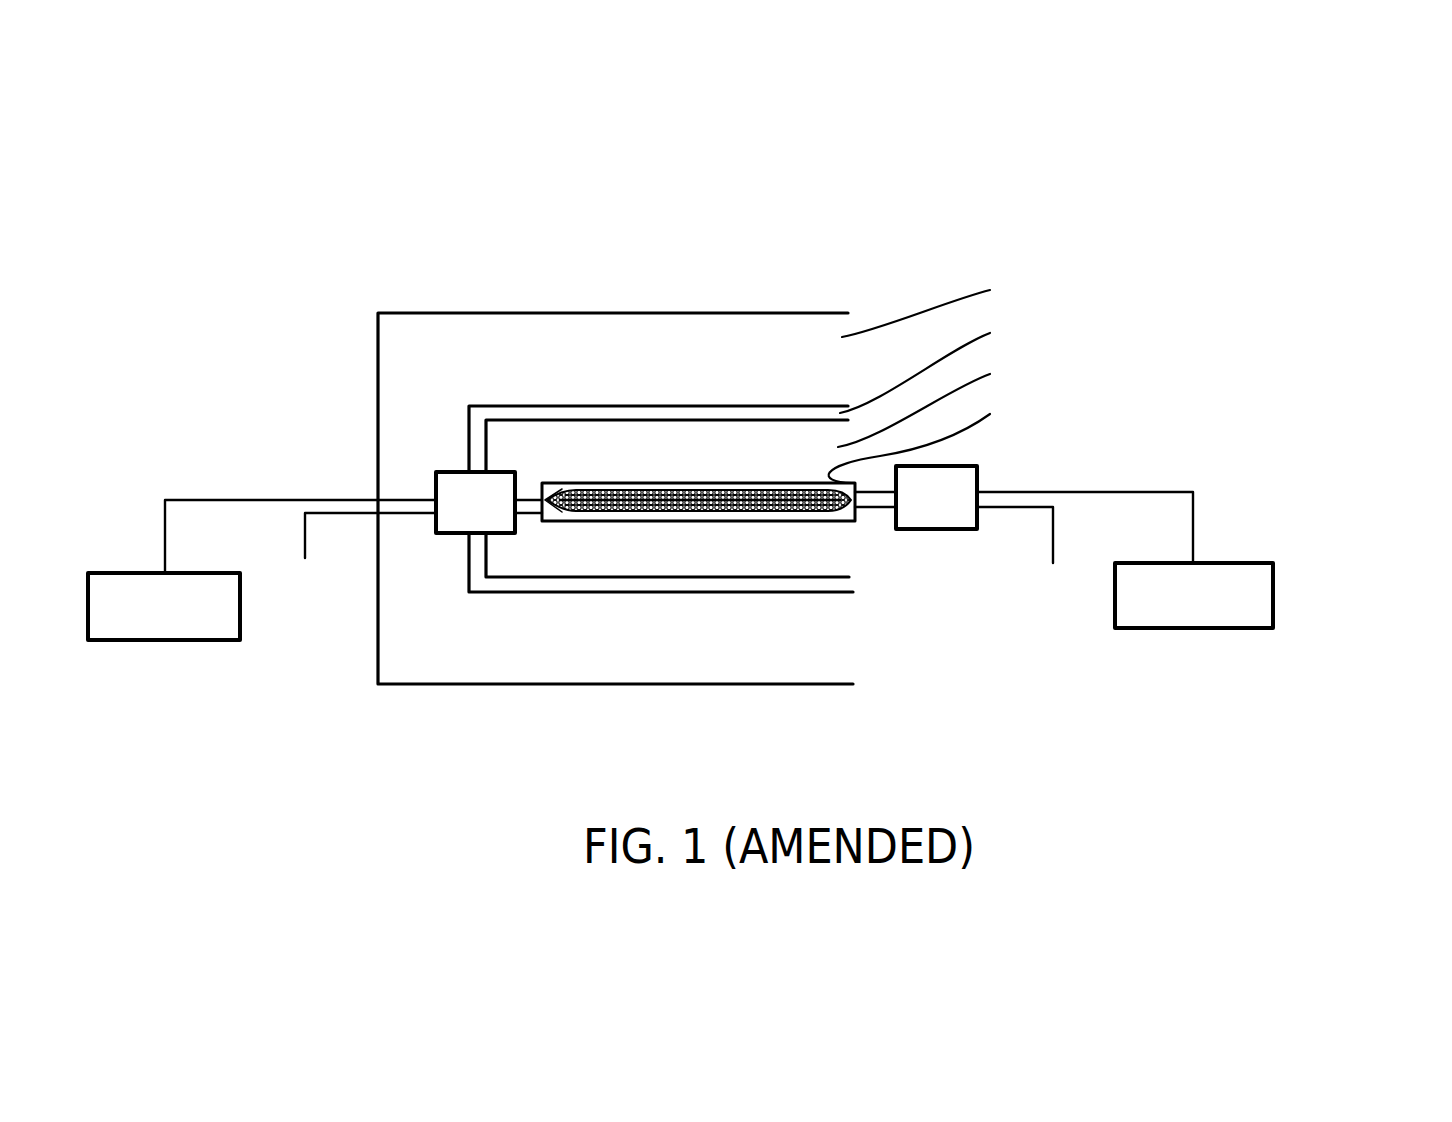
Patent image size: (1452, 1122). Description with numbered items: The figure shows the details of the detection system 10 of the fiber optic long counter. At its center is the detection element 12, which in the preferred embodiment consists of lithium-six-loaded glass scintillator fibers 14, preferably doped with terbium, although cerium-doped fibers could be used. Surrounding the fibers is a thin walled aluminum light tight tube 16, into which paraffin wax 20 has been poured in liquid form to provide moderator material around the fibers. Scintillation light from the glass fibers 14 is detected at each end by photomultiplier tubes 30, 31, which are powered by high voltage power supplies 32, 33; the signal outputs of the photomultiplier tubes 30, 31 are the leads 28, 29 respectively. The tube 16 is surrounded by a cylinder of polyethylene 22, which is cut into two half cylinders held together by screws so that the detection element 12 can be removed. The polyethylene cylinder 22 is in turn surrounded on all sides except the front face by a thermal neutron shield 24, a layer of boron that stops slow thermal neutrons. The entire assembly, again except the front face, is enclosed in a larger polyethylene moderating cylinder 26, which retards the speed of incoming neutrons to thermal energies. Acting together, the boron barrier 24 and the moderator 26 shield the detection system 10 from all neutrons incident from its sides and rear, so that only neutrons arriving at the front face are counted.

The detection system 10 is at (531, 272).
The detection element 12 is at (852, 520).
The glass scintillator fibers 14 is at (845, 522).
The aluminum light tight tube 16 is at (793, 522).
The paraffin wax 20 is at (560, 522).
The polyethylene cylinder 22 is at (748, 450).
The thermal neutron shield 24 is at (672, 412).
The polyethylene moderating cylinder 26 is at (660, 313).
The signal output 28 is at (1053, 548).
The signal output 29 is at (305, 556).
The photomultiplier tube 30 is at (920, 529).
The photomultiplier tube 31 is at (453, 478).
The high voltage power supply 32 is at (1203, 628).
The high voltage power supply 33 is at (152, 640).